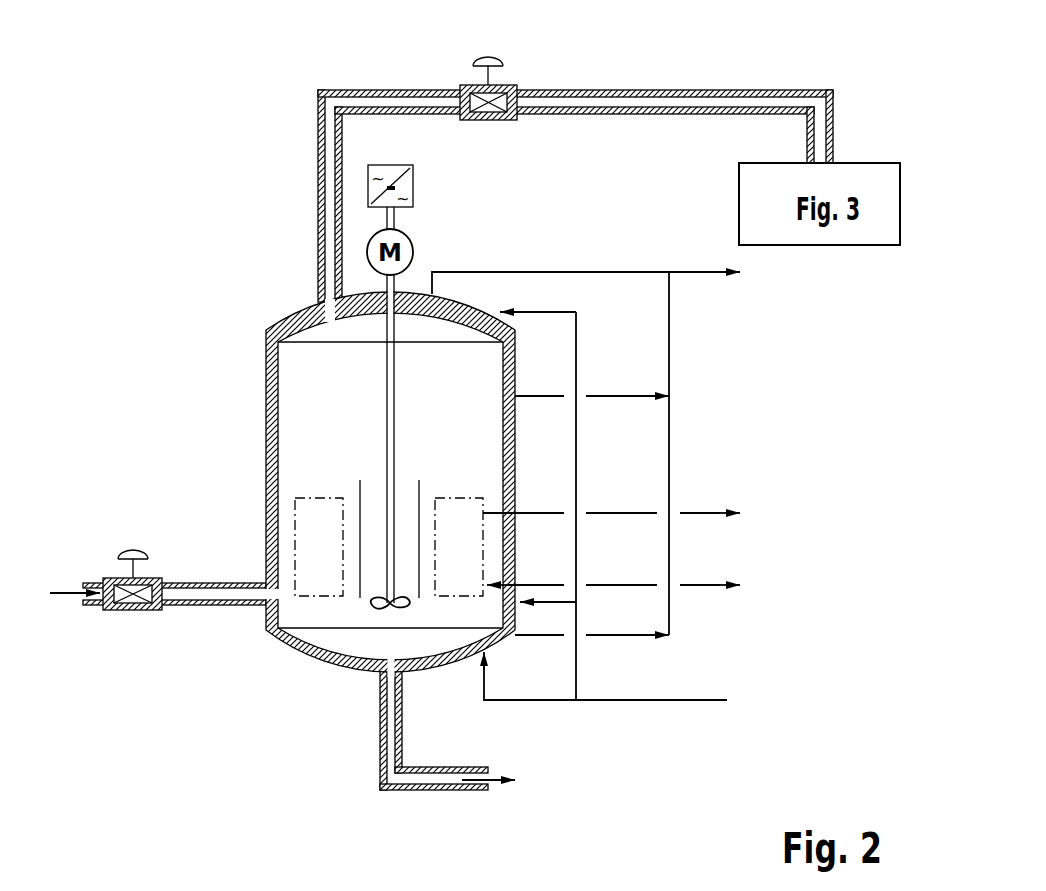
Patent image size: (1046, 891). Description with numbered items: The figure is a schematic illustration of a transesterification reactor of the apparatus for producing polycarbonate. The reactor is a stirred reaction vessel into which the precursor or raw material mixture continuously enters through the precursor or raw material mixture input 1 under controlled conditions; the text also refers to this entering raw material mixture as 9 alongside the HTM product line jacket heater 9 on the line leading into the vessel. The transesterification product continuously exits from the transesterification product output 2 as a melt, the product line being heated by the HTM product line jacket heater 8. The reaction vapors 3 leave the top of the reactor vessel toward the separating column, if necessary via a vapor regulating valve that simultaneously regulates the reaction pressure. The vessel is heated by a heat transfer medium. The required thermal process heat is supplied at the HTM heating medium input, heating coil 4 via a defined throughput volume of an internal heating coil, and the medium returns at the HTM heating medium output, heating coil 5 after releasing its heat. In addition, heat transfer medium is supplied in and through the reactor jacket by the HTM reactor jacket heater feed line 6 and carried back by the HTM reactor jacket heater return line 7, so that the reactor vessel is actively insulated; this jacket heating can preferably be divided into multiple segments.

The precursor or raw material mixture input 1 is at (72, 589).
The transesterification product output 2 is at (380, 724).
The reaction vapors 3 is at (420, 90).
The HTM heating medium input, heating coil 4 is at (622, 584).
The HTM heating medium output, heating coil 5 is at (626, 512).
The HTM reactor jacket heater feed line 6 is at (632, 703).
The HTM reactor jacket heater return line 7 is at (710, 270).
The HTM product line jacket heater 8 is at (454, 767).
The HTM product line jacket heater 9 is at (228, 582).